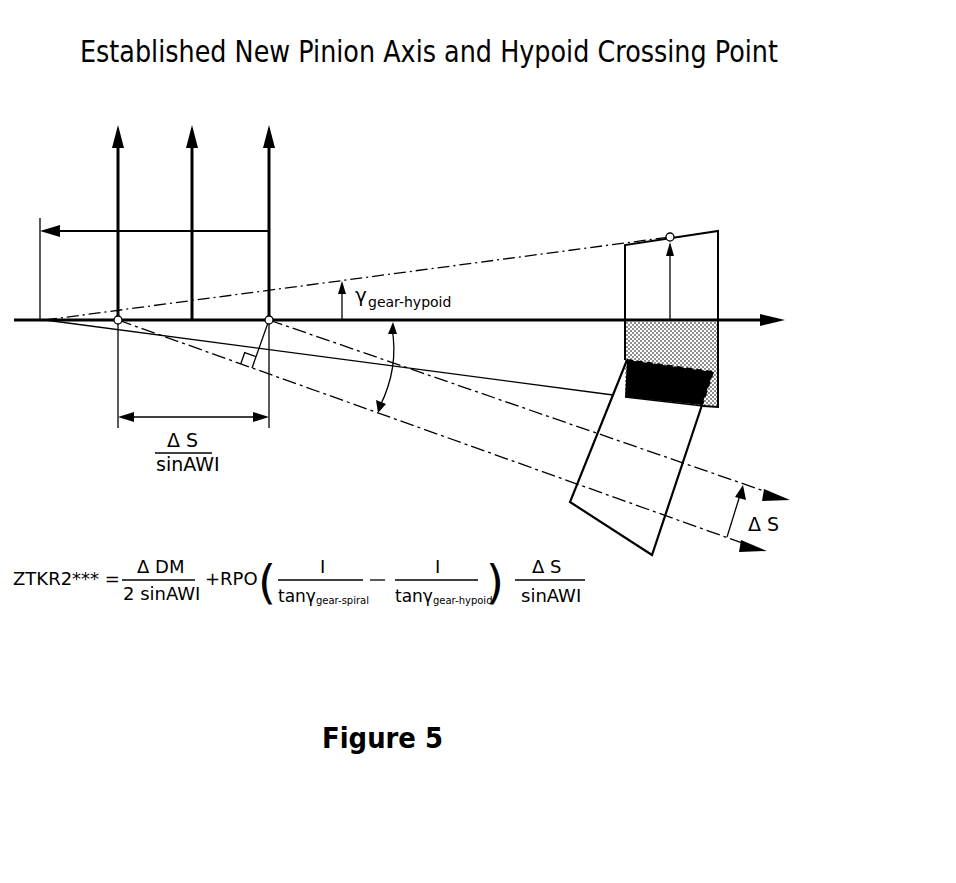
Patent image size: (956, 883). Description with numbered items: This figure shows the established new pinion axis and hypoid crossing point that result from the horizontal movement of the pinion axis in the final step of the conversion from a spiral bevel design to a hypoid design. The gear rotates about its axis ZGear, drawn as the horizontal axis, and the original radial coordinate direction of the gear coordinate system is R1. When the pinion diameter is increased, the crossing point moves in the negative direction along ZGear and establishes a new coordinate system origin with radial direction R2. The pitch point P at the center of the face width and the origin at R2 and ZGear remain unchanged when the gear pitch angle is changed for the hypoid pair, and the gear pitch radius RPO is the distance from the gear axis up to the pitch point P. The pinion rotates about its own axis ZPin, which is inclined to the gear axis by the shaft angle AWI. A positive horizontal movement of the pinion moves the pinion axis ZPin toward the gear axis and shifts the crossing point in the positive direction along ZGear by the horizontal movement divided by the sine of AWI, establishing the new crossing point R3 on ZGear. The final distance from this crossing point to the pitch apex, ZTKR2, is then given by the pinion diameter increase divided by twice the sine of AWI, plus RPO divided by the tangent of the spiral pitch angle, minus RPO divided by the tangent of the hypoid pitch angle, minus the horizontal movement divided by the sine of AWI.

The pitch point P is at (669, 225).
The gear pitch radius RPO is at (692, 281).
The radial coordinate direction of the gear coordinate system R1 is at (214, 222).
The radial coordinate direction of the new coordinate system origin R2 is at (140, 276).
The new crossing point R3 is at (285, 276).
The axis of rotation of the gear ZGear is at (399, 334).
The axis of rotation of the pinion ZPin is at (457, 458).
The shaft angle AWI is at (406, 367).
The distance crossing point to pitch cone ZTKR2 is at (149, 257).